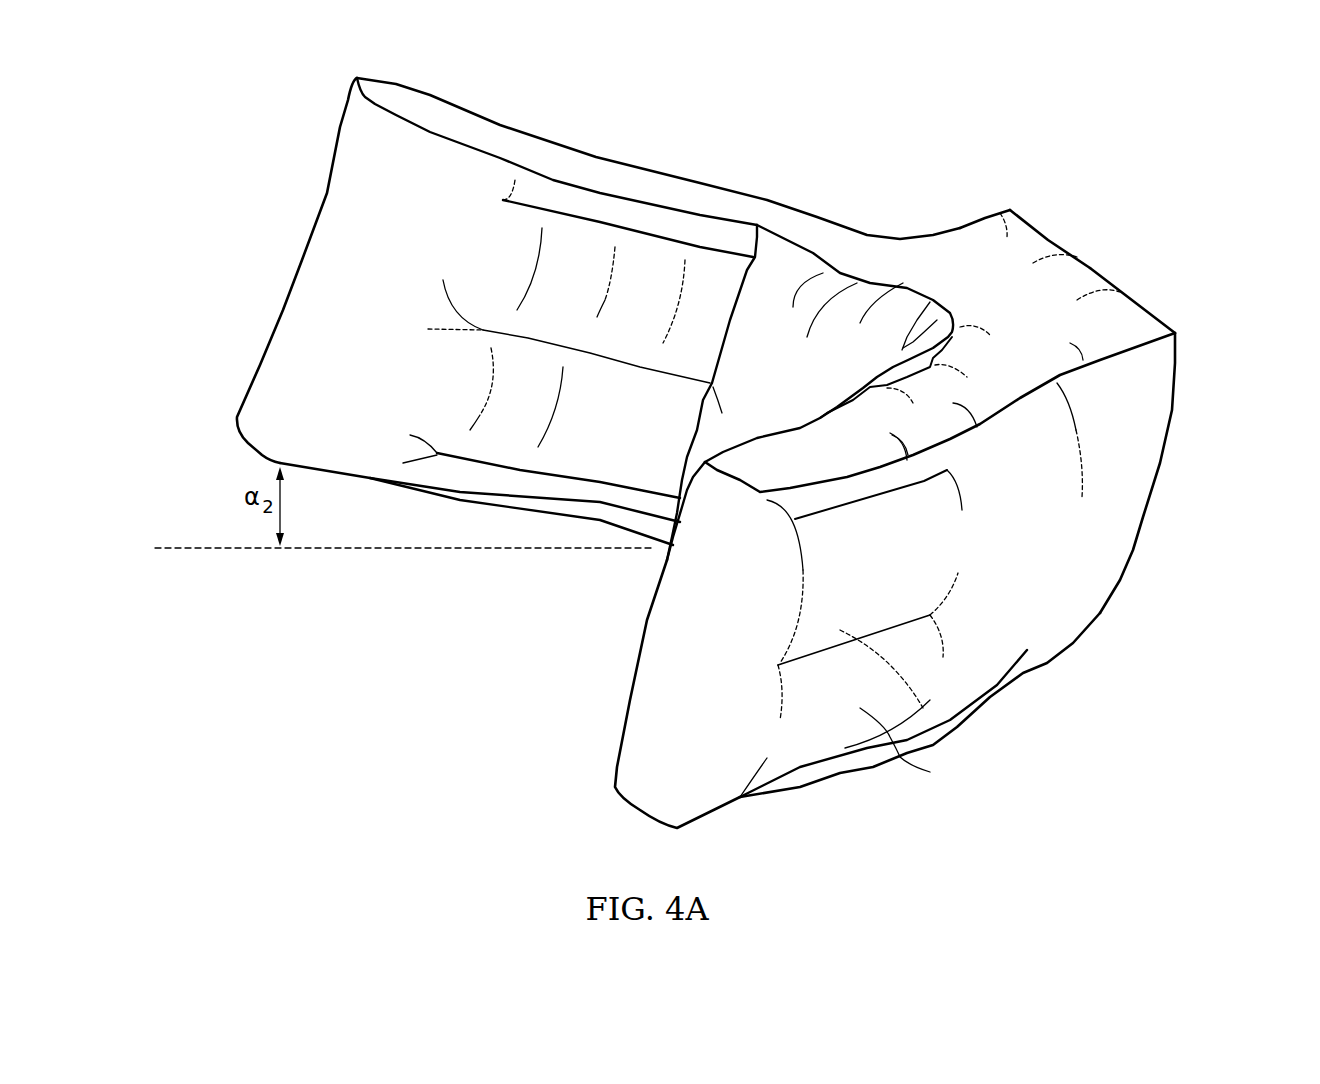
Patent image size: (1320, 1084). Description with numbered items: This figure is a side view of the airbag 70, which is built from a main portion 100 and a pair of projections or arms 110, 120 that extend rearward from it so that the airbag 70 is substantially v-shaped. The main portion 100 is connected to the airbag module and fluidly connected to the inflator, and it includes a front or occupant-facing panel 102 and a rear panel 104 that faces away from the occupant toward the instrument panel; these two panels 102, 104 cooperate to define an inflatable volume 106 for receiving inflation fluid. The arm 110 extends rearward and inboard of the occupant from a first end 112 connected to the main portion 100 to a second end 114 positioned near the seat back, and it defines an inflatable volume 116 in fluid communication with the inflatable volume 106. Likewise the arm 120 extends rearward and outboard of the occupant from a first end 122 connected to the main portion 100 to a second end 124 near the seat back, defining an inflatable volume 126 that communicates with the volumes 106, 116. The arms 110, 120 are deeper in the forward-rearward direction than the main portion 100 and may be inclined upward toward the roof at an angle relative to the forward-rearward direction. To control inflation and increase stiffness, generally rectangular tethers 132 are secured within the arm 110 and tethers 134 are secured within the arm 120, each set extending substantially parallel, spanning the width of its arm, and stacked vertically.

The airbag 70 is at (1013, 188).
The main portion 100 is at (1048, 240).
The front panel 102 is at (857, 283).
The rear panel 104 is at (1100, 272).
The inflatable volume 106 is at (1142, 410).
The arm 110 is at (363, 188).
The first end 112 is at (822, 198).
The second end 114 is at (256, 317).
The inflatable volume 116 is at (583, 238).
The arm 120 is at (883, 723).
The first end 122 is at (1075, 667).
The second end 124 is at (710, 843).
The inflatable volume 126 is at (903, 587).
The tethers 132 is at (485, 463).
The tethers 134 is at (923, 708).